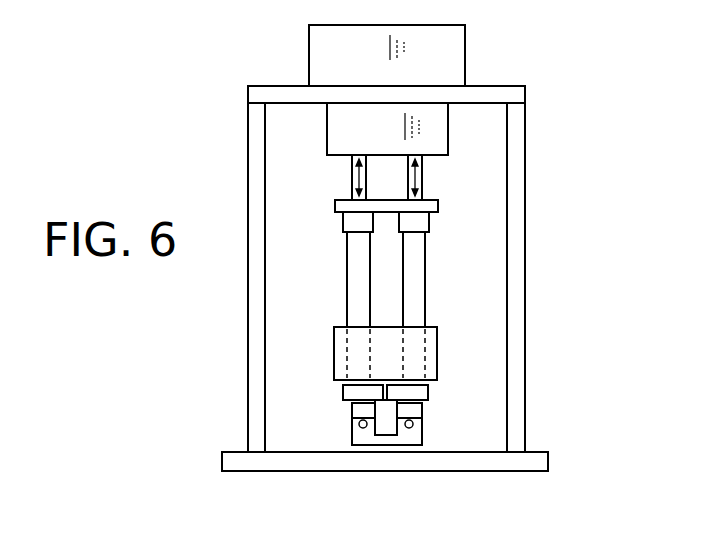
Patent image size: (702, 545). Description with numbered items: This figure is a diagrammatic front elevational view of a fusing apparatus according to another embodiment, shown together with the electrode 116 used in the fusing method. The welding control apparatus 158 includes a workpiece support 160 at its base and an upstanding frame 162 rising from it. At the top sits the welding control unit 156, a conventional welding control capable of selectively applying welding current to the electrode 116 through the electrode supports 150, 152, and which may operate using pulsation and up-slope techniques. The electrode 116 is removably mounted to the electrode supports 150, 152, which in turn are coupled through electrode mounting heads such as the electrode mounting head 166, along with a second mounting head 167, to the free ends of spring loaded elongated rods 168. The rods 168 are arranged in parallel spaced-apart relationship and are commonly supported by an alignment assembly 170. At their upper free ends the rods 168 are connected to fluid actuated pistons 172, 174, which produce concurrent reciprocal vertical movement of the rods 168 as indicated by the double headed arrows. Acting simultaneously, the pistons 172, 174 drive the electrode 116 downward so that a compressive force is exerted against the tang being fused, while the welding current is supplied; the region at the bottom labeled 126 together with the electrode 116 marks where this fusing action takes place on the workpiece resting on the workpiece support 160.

The welding control unit 156 is at (465, 53).
The welding control apparatus 158 is at (438, 269).
The workpiece support 160 is at (257, 455).
The upstanding frame 162 is at (513, 312).
The electrode mounting head 166 is at (428, 390).
The block 167 is at (343, 390).
The spring loaded elongated rods 168 is at (347, 278).
The alignment assembly 170 is at (336, 203).
The fluid actuated piston 172 is at (352, 178).
The fluid actuated piston 174 is at (423, 182).
The electrode support 150 is at (353, 408).
The electrode support 152 is at (419, 410).
The electrode 116 is at (404, 465).
The workpiece 126 is at (386, 417).